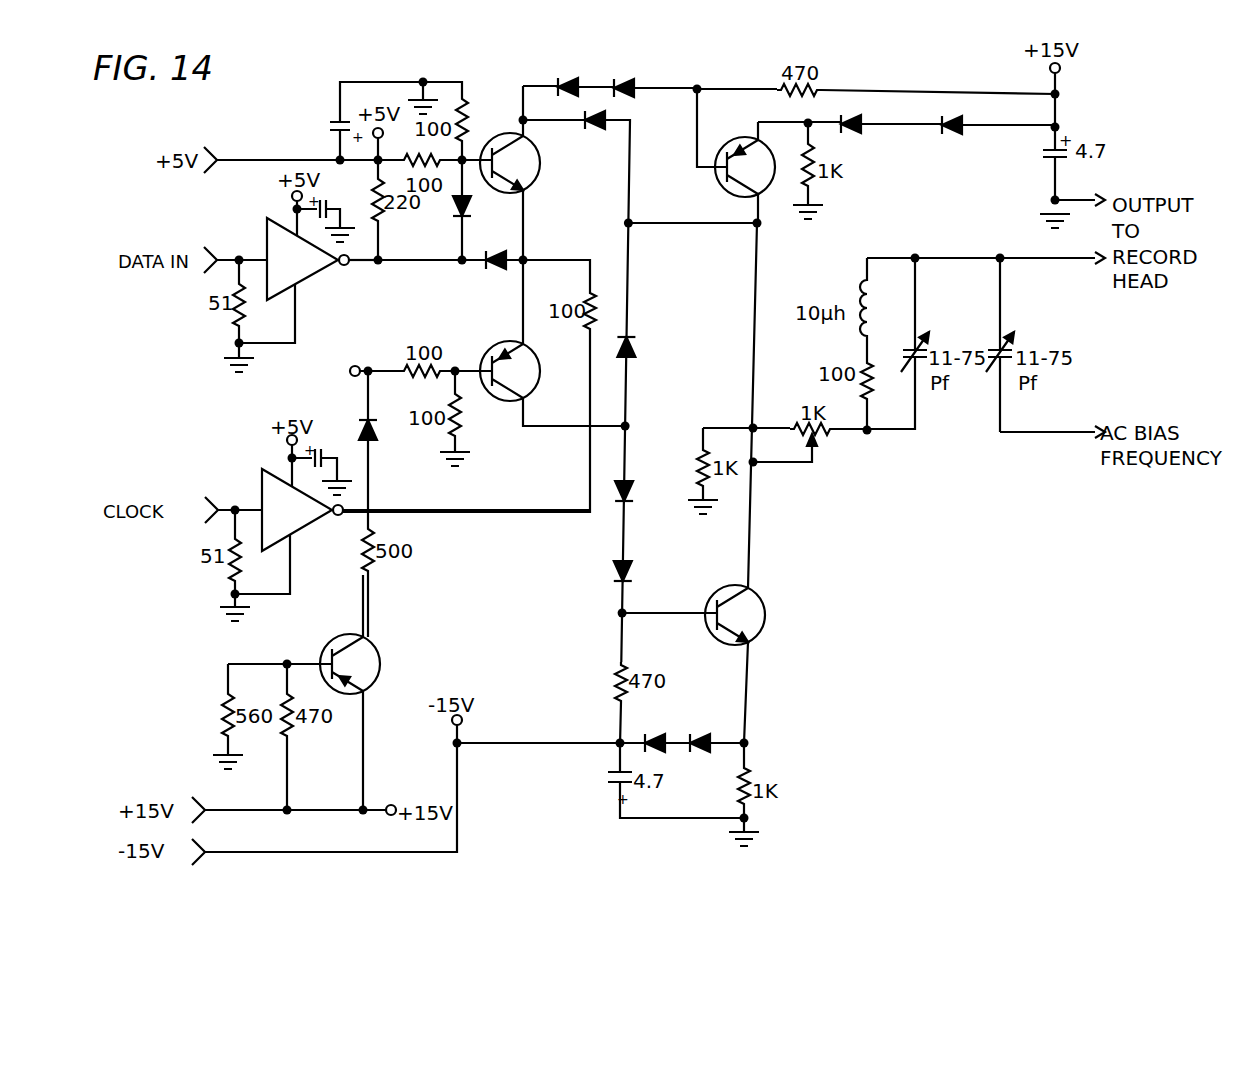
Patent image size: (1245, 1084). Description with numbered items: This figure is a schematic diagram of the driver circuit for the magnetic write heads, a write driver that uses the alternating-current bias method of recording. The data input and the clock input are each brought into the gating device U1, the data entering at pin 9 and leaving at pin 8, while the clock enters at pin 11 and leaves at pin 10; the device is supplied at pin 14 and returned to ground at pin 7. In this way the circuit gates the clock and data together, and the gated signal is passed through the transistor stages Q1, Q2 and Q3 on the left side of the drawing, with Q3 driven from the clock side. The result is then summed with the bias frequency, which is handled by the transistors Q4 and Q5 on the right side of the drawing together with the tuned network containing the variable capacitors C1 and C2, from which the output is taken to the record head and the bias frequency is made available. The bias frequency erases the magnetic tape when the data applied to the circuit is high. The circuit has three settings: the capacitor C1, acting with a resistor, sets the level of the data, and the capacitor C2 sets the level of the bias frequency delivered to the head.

The inverter integrated circuit U1 is at (305, 384).
The transistor 226 Q1 is at (532, 215).
The transistor 238 Q2 is at (540, 383).
The transistor 238 Q3 is at (325, 692).
The transistor 238 Q4 is at (736, 156).
The transistor 226 Q5 is at (756, 483).
The capacitor C1 is at (930, 344).
The capacitor C2 is at (1016, 345).
The U1 ground pin 7 is at (274, 437).
The U1 output pin 8 is at (361, 274).
The U1 data input pin 9 is at (242, 247).
The U1 clock output pin 10 is at (466, 497).
The U1 clock input pin 11 is at (242, 499).
The U1 supply pin 14 is at (295, 339).